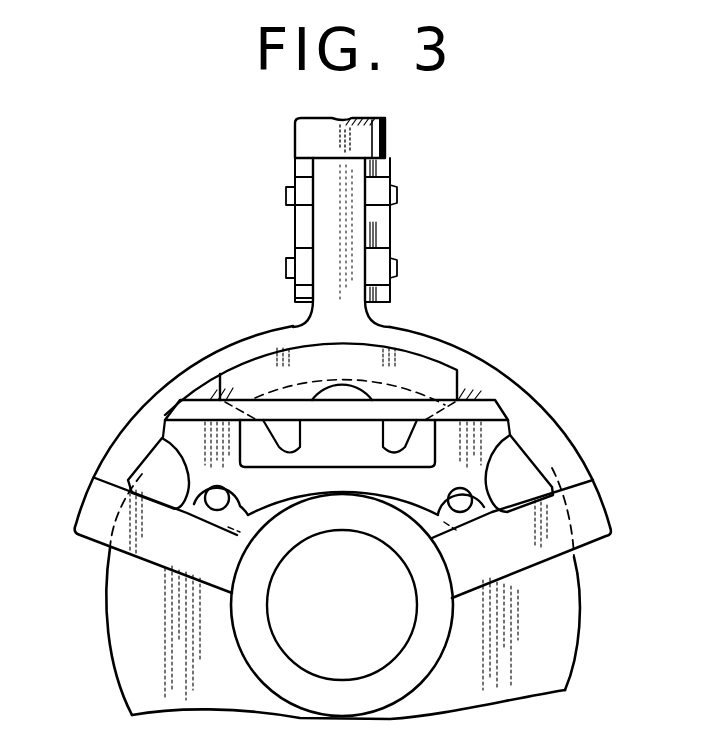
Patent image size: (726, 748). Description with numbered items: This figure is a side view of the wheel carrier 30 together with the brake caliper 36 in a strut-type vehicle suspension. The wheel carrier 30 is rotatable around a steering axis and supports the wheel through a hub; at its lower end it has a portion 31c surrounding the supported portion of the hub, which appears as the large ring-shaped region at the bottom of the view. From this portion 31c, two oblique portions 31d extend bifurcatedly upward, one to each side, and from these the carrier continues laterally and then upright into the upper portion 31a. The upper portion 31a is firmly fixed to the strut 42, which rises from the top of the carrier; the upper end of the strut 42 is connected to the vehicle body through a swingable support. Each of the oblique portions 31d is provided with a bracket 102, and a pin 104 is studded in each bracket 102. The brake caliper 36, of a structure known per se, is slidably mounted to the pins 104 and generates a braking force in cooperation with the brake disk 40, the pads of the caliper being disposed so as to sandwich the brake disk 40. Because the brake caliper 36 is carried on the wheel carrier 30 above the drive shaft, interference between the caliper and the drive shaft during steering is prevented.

The strut 42 is at (387, 131).
The brake caliper 36 is at (258, 368).
The upper portion 31a is at (421, 352).
The wheel carrier 30 is at (527, 388).
The brake disk 40 is at (505, 453).
The bracket 102 is at (172, 506).
The pin 104 is at (449, 506).
The oblique portions 31d is at (127, 547).
The portion surrounding the supported portion of the hub 31c is at (428, 655).